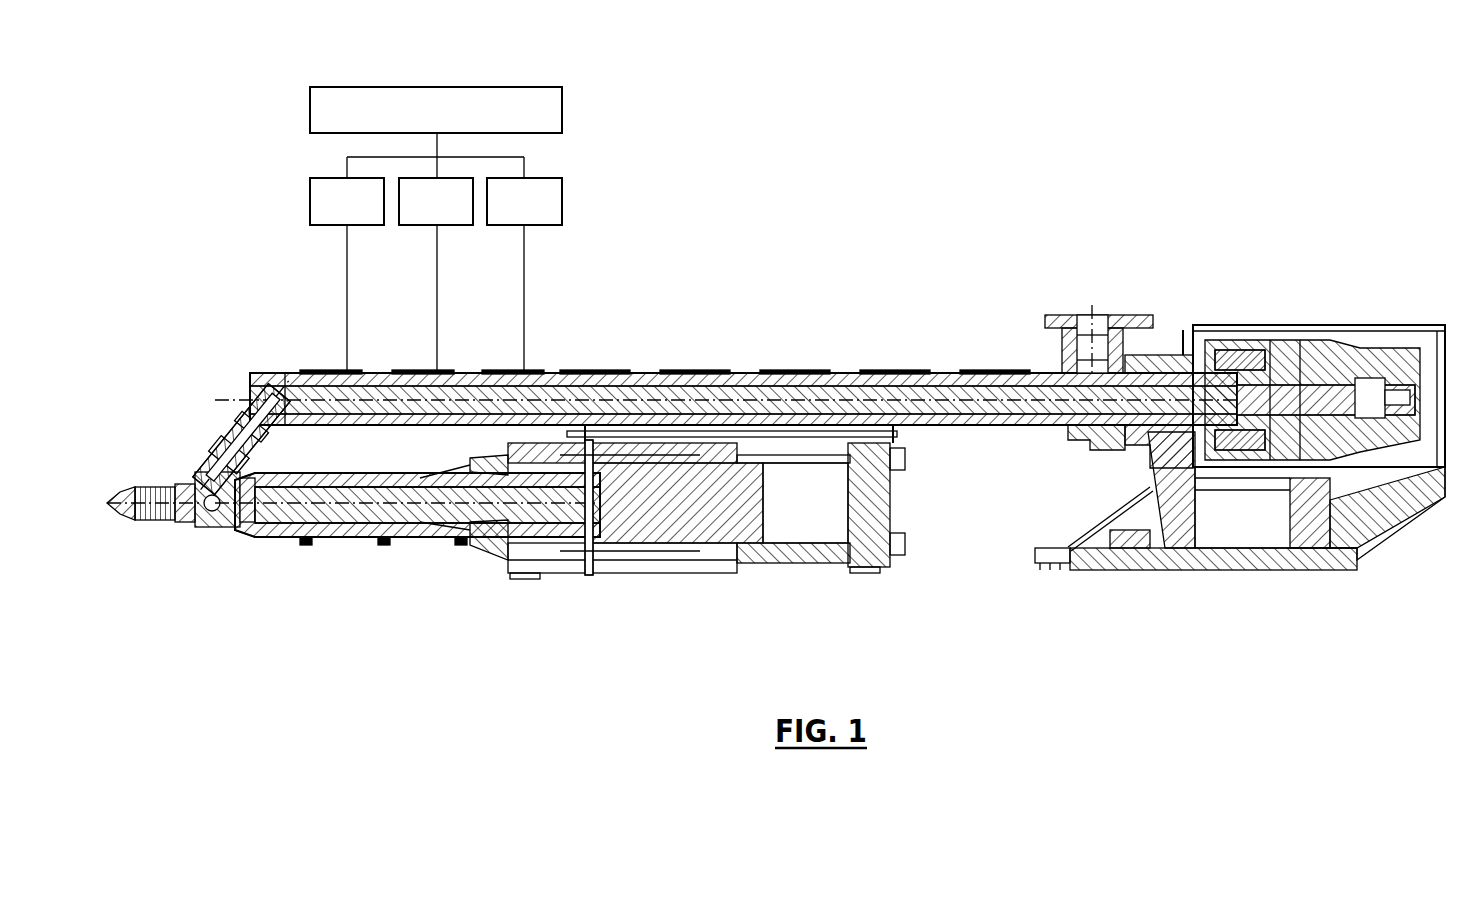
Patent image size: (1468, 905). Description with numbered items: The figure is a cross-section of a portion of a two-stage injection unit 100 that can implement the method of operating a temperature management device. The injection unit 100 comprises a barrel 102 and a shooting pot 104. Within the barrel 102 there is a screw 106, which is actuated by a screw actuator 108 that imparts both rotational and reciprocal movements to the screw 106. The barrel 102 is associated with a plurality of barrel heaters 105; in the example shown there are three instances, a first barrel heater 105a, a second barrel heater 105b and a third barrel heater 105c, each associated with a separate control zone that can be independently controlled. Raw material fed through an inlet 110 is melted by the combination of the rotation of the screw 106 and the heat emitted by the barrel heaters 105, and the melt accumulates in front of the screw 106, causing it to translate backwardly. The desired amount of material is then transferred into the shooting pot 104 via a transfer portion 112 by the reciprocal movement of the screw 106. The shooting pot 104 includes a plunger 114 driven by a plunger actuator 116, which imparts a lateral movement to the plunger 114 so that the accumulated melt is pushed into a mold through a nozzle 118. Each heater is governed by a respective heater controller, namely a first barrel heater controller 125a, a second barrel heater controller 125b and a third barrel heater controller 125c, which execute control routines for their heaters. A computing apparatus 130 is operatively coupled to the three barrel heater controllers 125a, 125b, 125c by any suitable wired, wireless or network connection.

The injection unit 100 is at (1199, 119).
The barrel 102 is at (910, 348).
The shooting pot 104 is at (373, 596).
The plurality of barrel heaters 105 is at (735, 372).
The first barrel heater 105a is at (338, 372).
The second barrel heater 105b is at (430, 372).
The third barrel heater 105c is at (518, 372).
The screw 106 is at (585, 372).
The screw actuator 108 is at (1450, 300).
The inlet 110 is at (1100, 316).
The transfer portion 112 is at (201, 467).
The plunger 114 is at (440, 493).
The plunger actuator 116 is at (888, 585).
The nozzle 118 is at (127, 528).
The first barrel heater controller 125a is at (318, 215).
The second barrel heater controller 125b is at (407, 215).
The third barrel heater controller 125c is at (495, 215).
The computing apparatus 130 is at (415, 124).